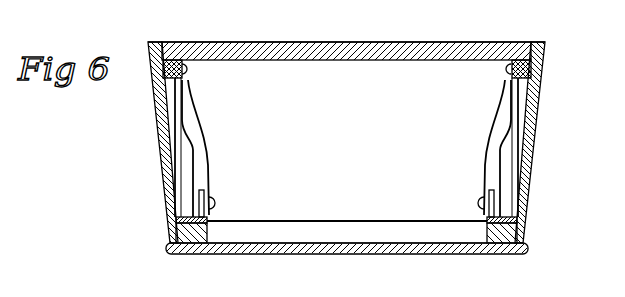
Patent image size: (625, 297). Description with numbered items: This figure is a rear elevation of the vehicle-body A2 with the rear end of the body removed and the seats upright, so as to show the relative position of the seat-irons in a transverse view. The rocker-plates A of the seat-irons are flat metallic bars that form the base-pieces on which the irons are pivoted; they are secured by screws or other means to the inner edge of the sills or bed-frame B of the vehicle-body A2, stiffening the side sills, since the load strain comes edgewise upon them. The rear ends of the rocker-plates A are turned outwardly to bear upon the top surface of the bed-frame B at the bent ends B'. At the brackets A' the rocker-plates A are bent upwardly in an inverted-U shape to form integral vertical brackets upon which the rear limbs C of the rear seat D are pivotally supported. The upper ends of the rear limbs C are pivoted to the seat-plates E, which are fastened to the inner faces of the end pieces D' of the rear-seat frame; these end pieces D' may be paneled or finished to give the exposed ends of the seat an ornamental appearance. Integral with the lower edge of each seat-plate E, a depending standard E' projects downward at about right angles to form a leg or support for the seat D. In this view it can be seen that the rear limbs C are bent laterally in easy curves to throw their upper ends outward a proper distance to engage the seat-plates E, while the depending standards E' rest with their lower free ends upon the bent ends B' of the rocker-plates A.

The rear seat D is at (346, 40).
The vehicle-body A2 is at (534, 159).
The end pieces of rear-seat frame D' is at (544, 142).
The seat-plates E is at (536, 64).
The depending standards E' is at (540, 147).
The rear limbs C is at (488, 140).
The brackets A' is at (526, 199).
The bent ends of rocker-plates B' is at (525, 214).
The bed-frame B is at (523, 235).
The rocker-plates A is at (347, 232).